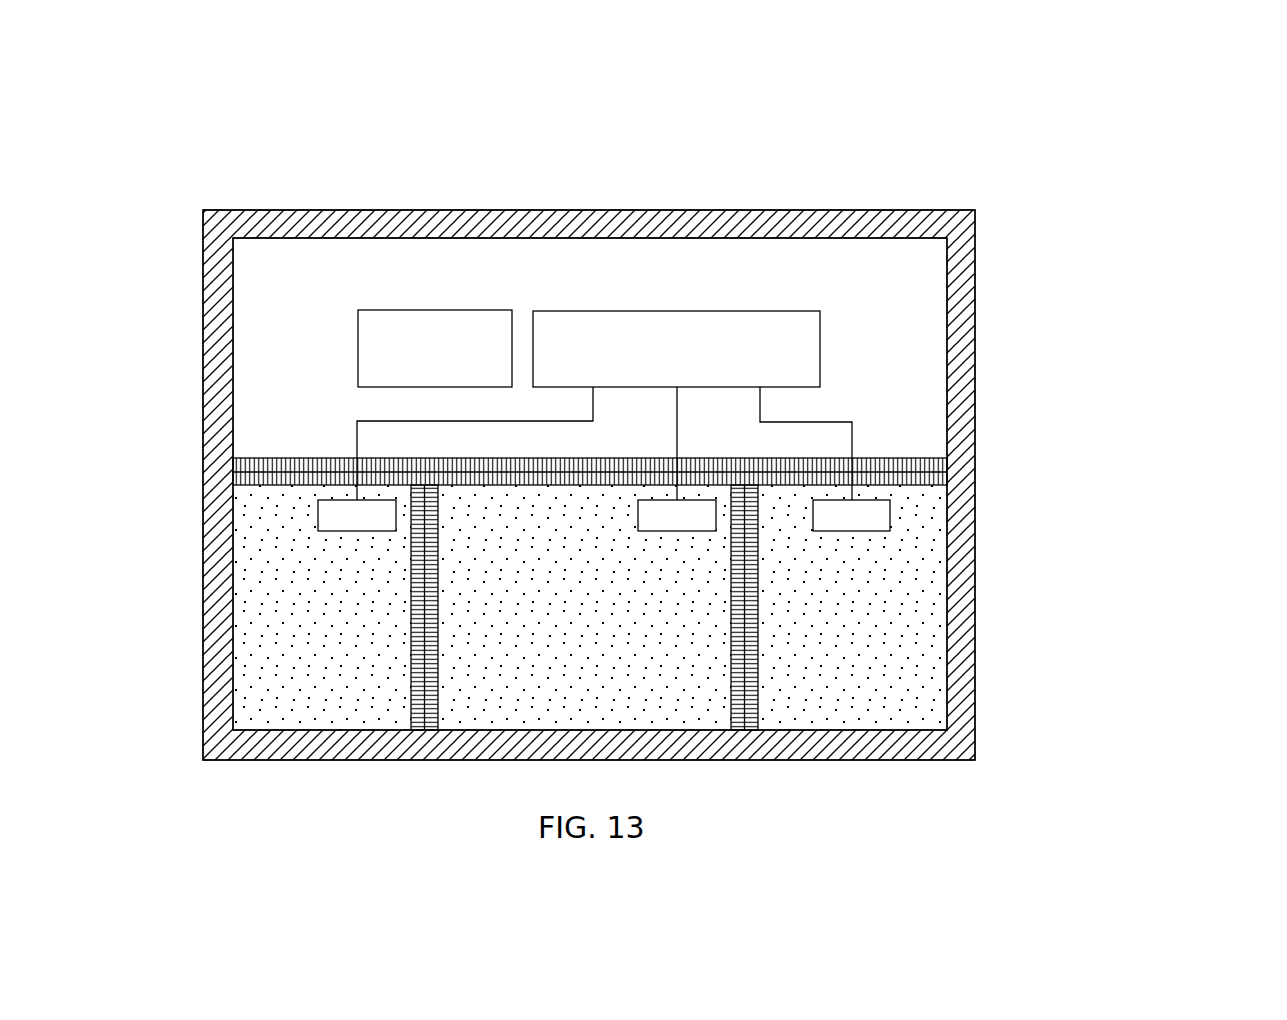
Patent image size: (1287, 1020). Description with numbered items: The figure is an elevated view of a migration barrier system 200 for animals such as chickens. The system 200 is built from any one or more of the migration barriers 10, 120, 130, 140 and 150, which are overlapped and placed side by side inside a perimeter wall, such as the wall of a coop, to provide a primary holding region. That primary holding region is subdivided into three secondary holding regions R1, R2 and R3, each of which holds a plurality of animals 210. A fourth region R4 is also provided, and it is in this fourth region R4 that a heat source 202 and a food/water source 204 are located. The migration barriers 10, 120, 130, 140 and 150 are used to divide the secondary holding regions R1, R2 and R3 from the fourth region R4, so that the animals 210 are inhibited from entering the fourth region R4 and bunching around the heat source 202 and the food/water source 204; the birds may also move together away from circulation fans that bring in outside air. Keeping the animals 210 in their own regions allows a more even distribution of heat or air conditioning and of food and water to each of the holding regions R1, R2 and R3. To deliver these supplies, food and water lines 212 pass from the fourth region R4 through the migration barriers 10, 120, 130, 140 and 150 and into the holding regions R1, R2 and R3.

The migration barrier system 200 is at (880, 88).
The fourth region R4 is at (568, 254).
The heat source 202 is at (410, 317).
The food/water source 204 is at (794, 330).
The food and water lines 212 is at (428, 428).
The migration barrier 10 is at (737, 414).
The migration barrier 120 is at (737, 414).
The migration barrier 130 is at (737, 414).
The migration barrier 140 is at (737, 414).
The migration barrier 150 is at (895, 458).
The animals 210 is at (256, 597).
The secondary holding region R1 is at (318, 692).
The secondary holding region R2 is at (545, 675).
The secondary holding region R3 is at (860, 685).